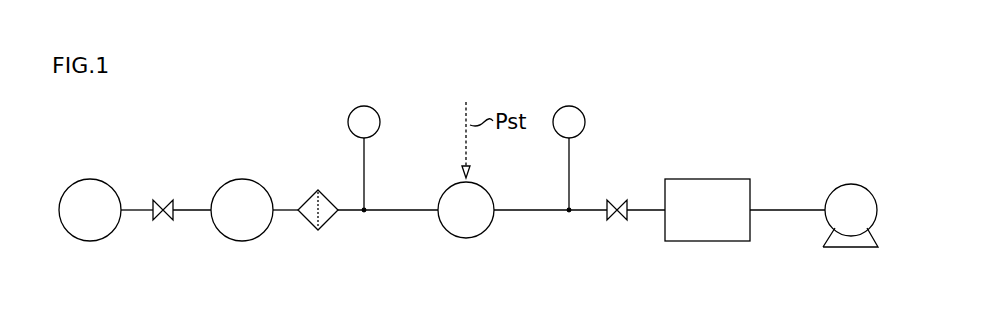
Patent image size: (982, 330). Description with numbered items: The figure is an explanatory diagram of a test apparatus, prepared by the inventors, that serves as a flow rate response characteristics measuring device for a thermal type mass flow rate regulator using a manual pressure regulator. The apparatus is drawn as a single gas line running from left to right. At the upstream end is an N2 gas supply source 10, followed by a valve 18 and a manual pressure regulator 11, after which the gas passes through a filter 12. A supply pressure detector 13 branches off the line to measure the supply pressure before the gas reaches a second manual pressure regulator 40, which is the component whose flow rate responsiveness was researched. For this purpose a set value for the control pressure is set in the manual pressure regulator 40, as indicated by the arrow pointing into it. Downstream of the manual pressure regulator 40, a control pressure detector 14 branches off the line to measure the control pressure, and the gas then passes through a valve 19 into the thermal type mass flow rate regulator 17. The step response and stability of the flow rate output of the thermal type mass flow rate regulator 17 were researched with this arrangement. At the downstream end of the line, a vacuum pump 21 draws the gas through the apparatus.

The N2 gas supply source 10 is at (90, 179).
The valve 18 is at (160, 206).
The manual pressure regulator 11 is at (241, 179).
The filter 12 is at (308, 192).
The supply pressure detector 13 is at (381, 122).
The manual pressure regulator 40 is at (486, 191).
The control pressure detector 14 is at (586, 122).
The valve 19 is at (611, 205).
The thermal type mass flow rate regulator 17 is at (707, 179).
The vacuum pump 21 is at (851, 184).